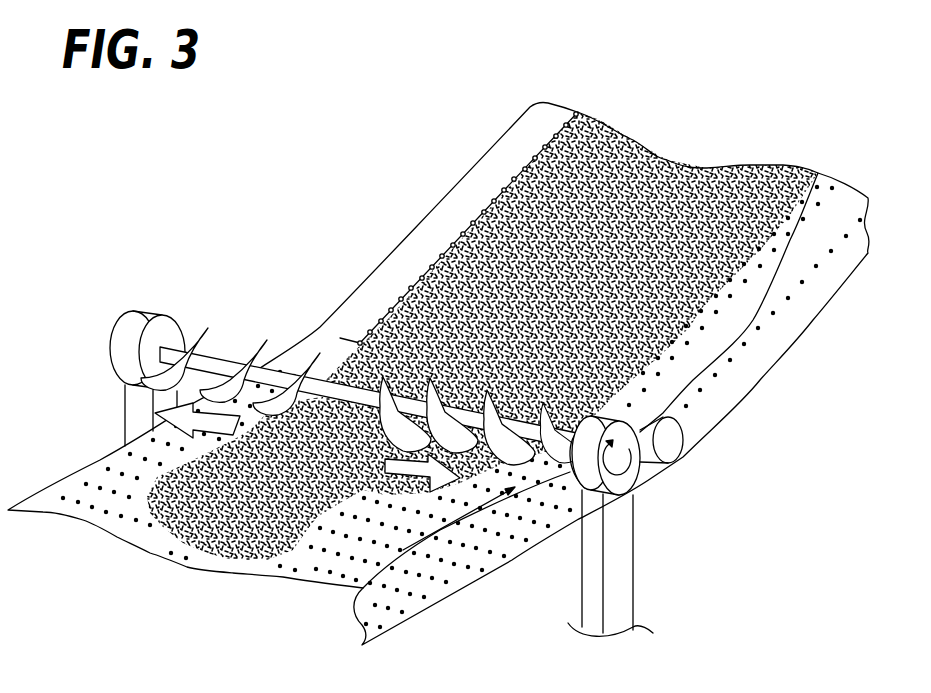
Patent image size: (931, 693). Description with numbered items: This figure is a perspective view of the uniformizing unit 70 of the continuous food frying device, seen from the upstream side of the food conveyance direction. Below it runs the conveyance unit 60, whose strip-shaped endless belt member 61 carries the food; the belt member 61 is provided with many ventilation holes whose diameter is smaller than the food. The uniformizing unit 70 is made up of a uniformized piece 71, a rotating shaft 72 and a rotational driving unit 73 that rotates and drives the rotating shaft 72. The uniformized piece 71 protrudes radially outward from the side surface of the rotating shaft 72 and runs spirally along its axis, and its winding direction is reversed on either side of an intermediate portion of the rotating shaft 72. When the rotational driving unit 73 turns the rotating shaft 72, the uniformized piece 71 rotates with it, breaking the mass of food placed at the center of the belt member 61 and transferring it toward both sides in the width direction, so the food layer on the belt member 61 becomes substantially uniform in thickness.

The conveyance unit 60 is at (490, 582).
The belt member 61 is at (373, 567).
The uniformizing unit 70 is at (647, 495).
The uniformized piece 71 is at (370, 370).
The rotating shaft 72 is at (588, 490).
The rotational driving unit 73 is at (633, 448).